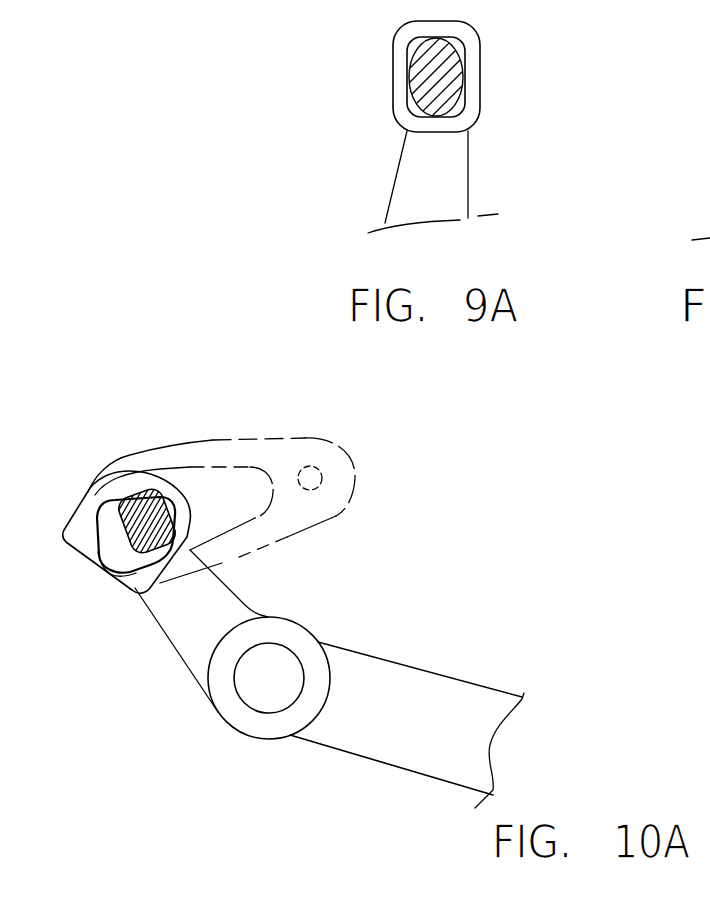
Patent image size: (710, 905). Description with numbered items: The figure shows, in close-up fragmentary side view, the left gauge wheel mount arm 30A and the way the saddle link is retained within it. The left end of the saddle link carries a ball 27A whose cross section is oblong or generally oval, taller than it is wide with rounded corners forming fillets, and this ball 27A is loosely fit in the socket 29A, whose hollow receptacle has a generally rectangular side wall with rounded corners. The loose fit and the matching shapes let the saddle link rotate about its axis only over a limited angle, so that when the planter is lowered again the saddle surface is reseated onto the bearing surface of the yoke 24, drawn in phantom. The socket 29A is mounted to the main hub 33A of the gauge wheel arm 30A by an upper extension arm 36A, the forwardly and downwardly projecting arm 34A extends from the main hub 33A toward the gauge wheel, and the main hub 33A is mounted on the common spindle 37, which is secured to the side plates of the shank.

In FIG. 10A, the yoke 24 is at (298, 443).
In FIG. 9A, the ball 27A is at (448, 87).
In FIG. 10A, the ball 27A is at (124, 568).
In FIG. 9A, the socket 29A is at (477, 45).
In FIG. 10A, the socket 29A is at (78, 505).
In FIG. 9A, the left gauge wheel mount arm 30A is at (484, 196).
In FIG. 10A, the main hub 33A is at (307, 635).
In FIG. 10A, the forwardly and downwardly projecting arm 34A is at (412, 690).
In FIG. 10A, the upper extension arm 36A is at (187, 638).
In FIG. 10A, the common spindle 37 is at (267, 678).